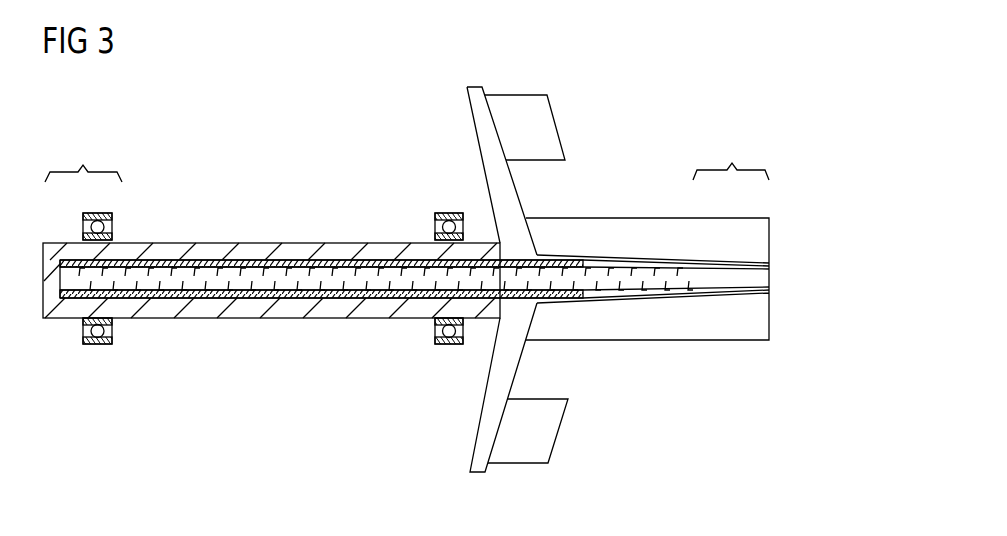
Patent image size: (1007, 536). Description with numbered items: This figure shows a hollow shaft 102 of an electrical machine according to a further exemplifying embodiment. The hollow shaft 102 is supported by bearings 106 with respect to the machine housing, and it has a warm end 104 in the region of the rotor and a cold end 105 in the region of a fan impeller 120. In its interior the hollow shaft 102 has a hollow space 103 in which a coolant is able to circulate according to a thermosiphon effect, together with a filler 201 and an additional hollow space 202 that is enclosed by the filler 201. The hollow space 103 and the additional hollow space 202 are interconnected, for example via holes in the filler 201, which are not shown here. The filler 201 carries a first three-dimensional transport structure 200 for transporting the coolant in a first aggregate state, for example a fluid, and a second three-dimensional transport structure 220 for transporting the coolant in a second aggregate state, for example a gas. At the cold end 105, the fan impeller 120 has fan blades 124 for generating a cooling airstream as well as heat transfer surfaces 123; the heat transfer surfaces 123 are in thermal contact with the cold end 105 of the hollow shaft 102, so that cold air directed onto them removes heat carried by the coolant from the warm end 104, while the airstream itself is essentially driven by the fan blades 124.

The hollow shaft 102 is at (173, 320).
The hollow space 103 is at (353, 297).
The warm end 104 is at (83, 158).
The cold end 105 is at (731, 156).
The bearings 106 is at (97, 345).
The fan impeller 120 is at (480, 153).
The heat transfer surfaces 123 is at (730, 330).
The fan blades 124 is at (547, 432).
The first three-dimensional transport structure 200 is at (283, 267).
The filler 201 is at (270, 283).
The additional hollow space 202 is at (230, 277).
The second three-dimensional transport structure 220 is at (337, 267).